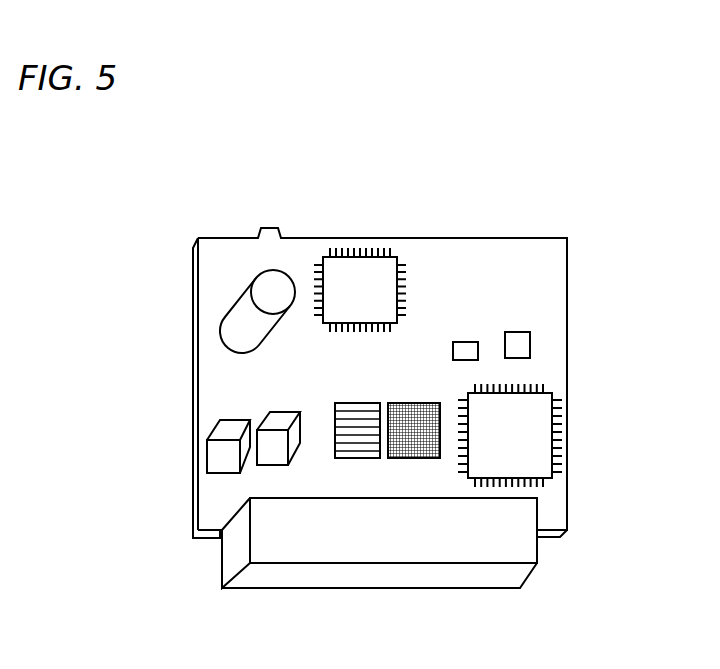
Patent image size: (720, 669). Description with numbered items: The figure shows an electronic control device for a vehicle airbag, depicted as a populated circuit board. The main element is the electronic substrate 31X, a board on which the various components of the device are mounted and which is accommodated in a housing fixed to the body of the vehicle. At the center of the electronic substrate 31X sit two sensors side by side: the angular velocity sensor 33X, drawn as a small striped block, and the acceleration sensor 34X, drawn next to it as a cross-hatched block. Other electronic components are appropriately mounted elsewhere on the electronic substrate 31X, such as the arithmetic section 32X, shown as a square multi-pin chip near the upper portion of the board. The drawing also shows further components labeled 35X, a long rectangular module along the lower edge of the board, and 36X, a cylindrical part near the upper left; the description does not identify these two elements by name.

The electronic substrate 31X is at (376, 229).
The arithmetic section 32X is at (375, 283).
The angular velocity sensor 33X is at (350, 422).
The acceleration sensor 34X is at (440, 402).
The battery / rectangular module 35X is at (277, 534).
The cylindrical component 36X is at (248, 312).